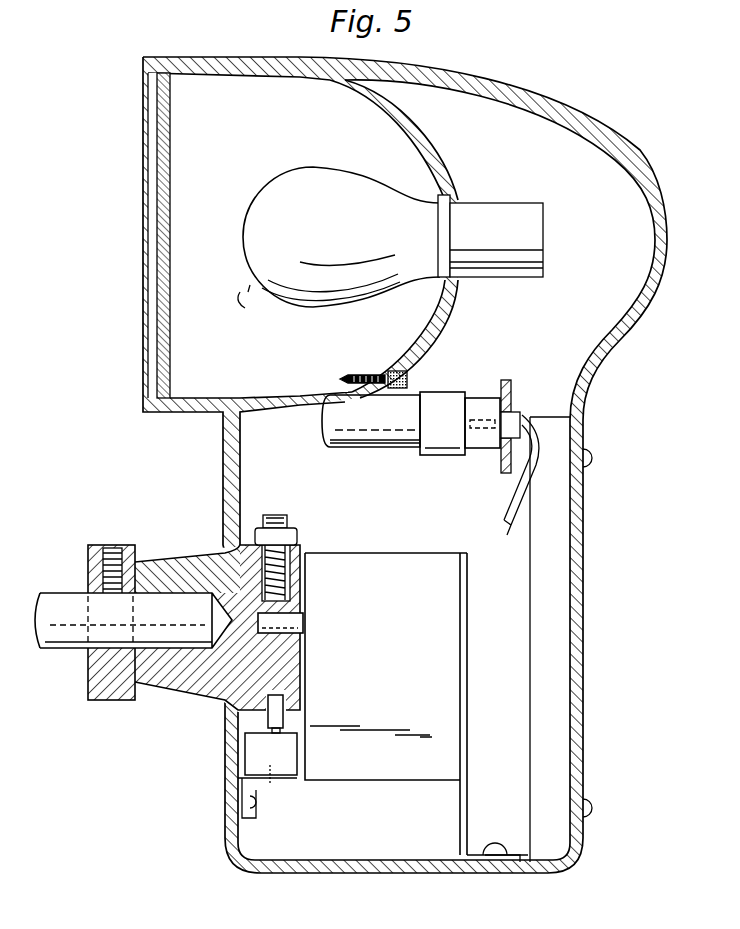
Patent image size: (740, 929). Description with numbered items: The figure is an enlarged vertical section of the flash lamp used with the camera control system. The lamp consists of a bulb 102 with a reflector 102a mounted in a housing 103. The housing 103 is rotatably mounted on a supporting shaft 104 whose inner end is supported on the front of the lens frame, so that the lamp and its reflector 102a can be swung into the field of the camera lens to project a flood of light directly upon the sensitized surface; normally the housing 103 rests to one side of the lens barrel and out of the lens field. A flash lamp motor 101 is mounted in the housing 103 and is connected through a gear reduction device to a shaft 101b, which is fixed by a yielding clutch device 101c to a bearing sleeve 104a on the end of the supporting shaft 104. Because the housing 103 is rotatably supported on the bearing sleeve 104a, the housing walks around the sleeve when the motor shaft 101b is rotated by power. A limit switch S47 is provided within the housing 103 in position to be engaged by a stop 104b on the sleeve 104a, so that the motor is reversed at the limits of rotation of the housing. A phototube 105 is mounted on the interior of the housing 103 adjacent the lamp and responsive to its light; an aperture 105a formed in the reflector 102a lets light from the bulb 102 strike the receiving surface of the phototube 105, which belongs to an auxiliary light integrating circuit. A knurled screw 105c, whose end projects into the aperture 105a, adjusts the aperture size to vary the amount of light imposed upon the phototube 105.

The flash lamp motor 101 is at (420, 770).
The shaft 101b is at (303, 624).
The yielding clutch device 101c is at (300, 590).
The bulb 102 is at (275, 280).
The reflector 102a is at (457, 295).
The housing 103 is at (600, 378).
The shaft 104 is at (65, 650).
The bearing sleeve 104a is at (194, 668).
The stop 104b is at (283, 718).
The phototube 105 is at (378, 440).
The aperture 105a is at (340, 377).
The knurled screw 105c is at (405, 368).
The limit switch S47 is at (262, 752).